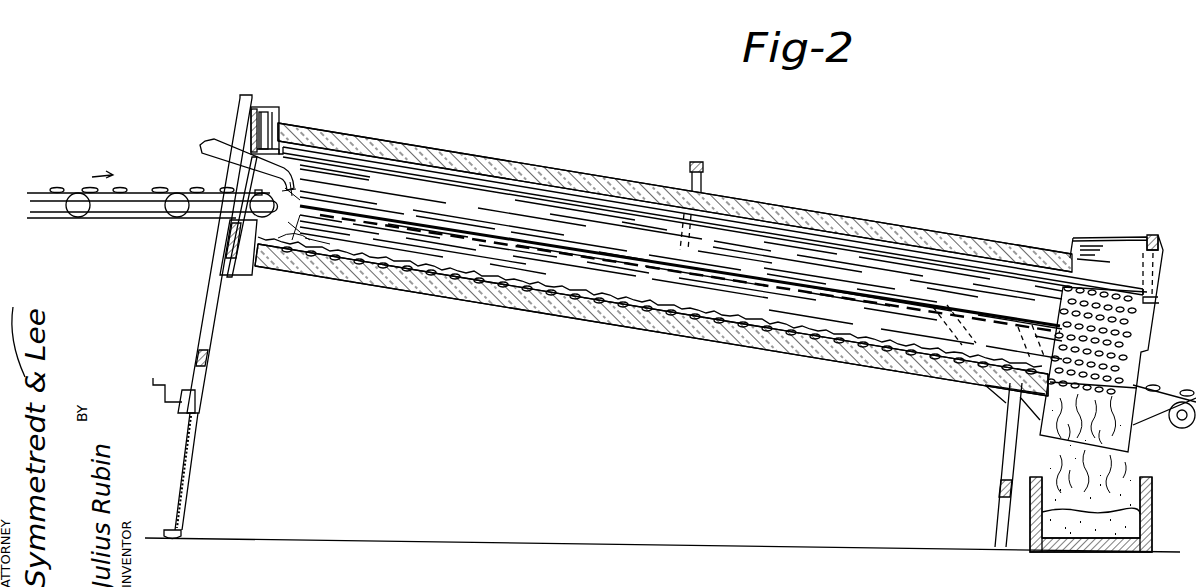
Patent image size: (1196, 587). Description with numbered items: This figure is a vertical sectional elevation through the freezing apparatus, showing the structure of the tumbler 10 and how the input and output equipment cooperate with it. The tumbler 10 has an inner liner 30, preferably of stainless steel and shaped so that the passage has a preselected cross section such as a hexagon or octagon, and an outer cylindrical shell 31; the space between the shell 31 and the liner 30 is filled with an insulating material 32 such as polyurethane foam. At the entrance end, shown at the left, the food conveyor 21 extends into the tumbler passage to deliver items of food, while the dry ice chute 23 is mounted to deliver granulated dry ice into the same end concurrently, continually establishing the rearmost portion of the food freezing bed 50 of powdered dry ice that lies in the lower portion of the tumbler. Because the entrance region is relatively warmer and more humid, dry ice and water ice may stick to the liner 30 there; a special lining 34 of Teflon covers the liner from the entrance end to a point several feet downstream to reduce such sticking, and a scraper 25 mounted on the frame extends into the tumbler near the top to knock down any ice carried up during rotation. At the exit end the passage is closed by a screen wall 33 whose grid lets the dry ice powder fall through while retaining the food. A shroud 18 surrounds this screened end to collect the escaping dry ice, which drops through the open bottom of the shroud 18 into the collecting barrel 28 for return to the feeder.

The tumbler 10 is at (872, 220).
The shroud 18 is at (1115, 240).
The food conveyor 21 is at (143, 192).
The dry ice chute 23 is at (200, 157).
The scraper 25 is at (763, 233).
The collecting barrel 28 is at (1153, 503).
The liner 30 is at (575, 192).
The outer cylindrical shell 31 is at (517, 160).
The insulating material 32 is at (663, 190).
The screen wall 33 is at (1067, 292).
The special lining 34 is at (377, 170).
The food freezing bed 50 is at (418, 257).